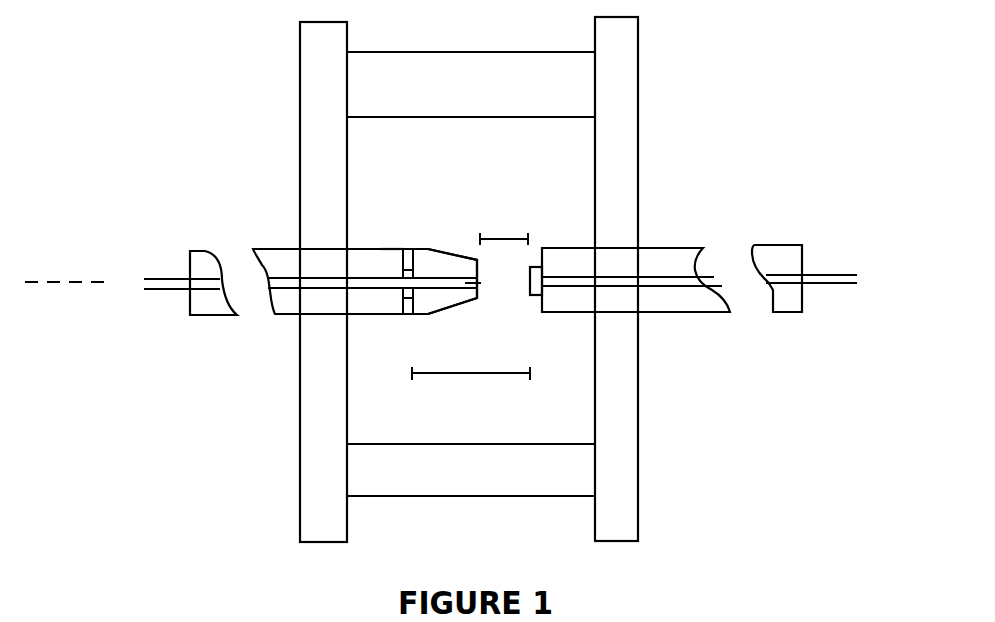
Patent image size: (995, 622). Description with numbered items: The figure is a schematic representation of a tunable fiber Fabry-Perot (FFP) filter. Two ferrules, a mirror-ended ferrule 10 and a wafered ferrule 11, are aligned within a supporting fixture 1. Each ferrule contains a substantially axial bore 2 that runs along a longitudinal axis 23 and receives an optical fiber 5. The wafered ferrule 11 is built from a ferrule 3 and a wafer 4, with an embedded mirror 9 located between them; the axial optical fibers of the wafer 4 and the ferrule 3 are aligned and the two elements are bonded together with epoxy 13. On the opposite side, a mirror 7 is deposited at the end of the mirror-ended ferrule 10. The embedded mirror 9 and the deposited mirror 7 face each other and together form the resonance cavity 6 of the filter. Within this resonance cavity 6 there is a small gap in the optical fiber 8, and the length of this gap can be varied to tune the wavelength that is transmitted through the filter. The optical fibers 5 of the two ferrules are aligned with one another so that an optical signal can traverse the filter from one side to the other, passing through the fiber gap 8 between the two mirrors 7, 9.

The supporting fixture 1 is at (260, 117).
The axial bore 2 is at (355, 258).
The ferrule 3 is at (297, 273).
The wafer 4 is at (445, 265).
The optical fiber 5 is at (165, 290).
The resonance cavity 6 is at (475, 374).
The mirror 7 is at (535, 298).
The gap in the optical fiber 8 is at (505, 240).
The embedded mirror 9 is at (392, 264).
The mirror-ended ferrule 10 is at (668, 268).
The wafered ferrule 11 is at (325, 298).
The epoxy 13 is at (407, 318).
The longitudinal axis 23 is at (80, 284).